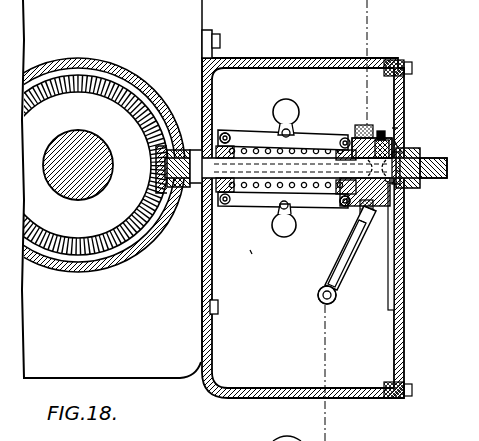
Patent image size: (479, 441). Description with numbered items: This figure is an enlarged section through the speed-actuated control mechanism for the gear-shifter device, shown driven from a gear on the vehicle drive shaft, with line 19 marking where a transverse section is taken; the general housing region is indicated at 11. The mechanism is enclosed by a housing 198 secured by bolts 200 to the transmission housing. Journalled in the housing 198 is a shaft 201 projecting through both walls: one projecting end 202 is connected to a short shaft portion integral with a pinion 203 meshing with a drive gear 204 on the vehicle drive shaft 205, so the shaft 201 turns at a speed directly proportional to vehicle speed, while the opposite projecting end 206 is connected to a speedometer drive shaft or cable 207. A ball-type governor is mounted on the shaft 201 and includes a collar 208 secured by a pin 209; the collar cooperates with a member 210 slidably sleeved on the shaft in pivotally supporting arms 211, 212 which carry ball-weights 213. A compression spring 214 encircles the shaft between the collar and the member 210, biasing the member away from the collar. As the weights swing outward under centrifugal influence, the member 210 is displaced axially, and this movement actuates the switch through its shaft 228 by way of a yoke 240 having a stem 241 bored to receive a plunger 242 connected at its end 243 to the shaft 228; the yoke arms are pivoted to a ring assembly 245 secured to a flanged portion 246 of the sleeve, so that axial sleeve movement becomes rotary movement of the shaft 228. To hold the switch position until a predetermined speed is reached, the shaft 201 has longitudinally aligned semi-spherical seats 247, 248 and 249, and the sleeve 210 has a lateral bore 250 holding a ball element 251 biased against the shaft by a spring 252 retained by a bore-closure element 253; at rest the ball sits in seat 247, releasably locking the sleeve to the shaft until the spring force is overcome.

The housing 11 is at (112, 323).
The section line 19— 19 is at (377, 15).
The housing 198 is at (296, 58).
The bolts 200 is at (220, 40).
The shaft 201 is at (306, 168).
The projecting end 202 is at (196, 190).
The pinion 203 is at (160, 165).
The drive gear 204 is at (148, 104).
The vehicle drive shaft 205 is at (80, 142).
The opposite projecting end 206 is at (406, 160).
The speedometer drive shaft or cable 207 is at (426, 164).
The collar 208 is at (247, 140).
The pin 209 is at (226, 128).
The member 210 is at (352, 140).
The arm 211 is at (250, 208).
The arm 212 is at (312, 208).
The ball-weights 213 is at (282, 237).
The compression spring 214 is at (298, 150).
The shaft 228 is at (318, 304).
The yoke 240 is at (352, 228).
The stem 241 is at (346, 252).
The plunger 242 is at (340, 272).
The end 243 is at (337, 292).
The ring assembly 245 is at (360, 125).
The flanged portion 246 is at (378, 128).
The semi-spherical seat 247 is at (398, 172).
The semi-spherical seat 248 is at (386, 182).
The semi-spherical seat 249 is at (278, 210).
The lateral bore 250 is at (398, 145).
The ball element 251 is at (404, 152).
The spring 252 is at (395, 126).
The bore-closure element 253 is at (383, 138).